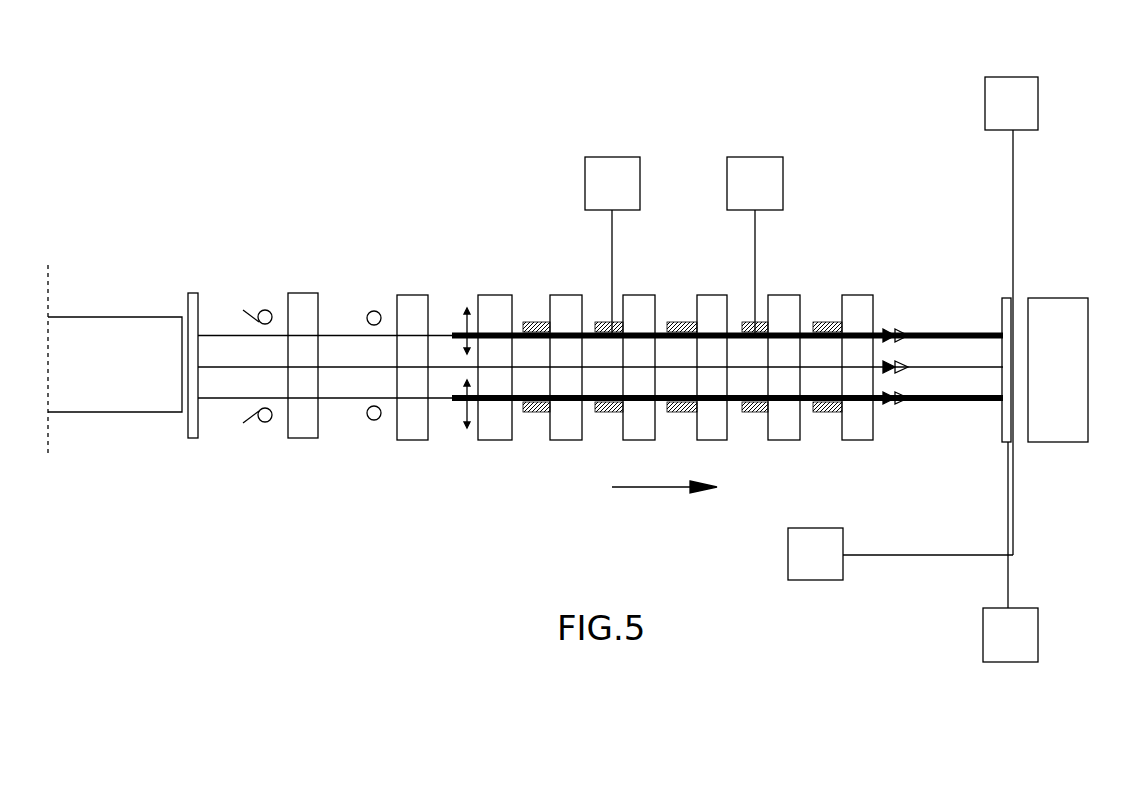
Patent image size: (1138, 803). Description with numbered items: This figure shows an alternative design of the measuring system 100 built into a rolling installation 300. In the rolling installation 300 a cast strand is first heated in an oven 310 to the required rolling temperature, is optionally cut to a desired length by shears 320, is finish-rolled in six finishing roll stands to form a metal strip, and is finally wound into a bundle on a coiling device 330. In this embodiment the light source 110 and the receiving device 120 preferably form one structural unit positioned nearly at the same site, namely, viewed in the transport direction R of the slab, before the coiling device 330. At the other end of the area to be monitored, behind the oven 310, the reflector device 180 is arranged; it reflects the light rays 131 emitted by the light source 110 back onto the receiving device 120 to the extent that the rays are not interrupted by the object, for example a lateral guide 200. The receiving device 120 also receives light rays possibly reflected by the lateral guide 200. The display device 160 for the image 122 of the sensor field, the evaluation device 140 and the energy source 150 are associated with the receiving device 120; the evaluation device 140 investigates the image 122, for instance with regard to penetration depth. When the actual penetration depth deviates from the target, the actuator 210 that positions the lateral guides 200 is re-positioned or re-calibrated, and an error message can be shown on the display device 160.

The measuring system 100 is at (690, 72).
The light source 110 is at (953, 323).
The receiving device 120 is at (1003, 302).
The image 122 is at (975, 292).
The light rays 131 is at (950, 340).
The evaluation device 140 is at (1000, 630).
The energy source 150 is at (815, 555).
The display device 160 is at (1007, 95).
The reflector device 180 is at (197, 437).
The lateral guides 200 is at (455, 327).
The actuator 210 is at (627, 177).
The rolling installation 300 is at (440, 72).
The oven 310 is at (128, 338).
The shears 320 is at (302, 308).
The coiling device 330 is at (1046, 425).